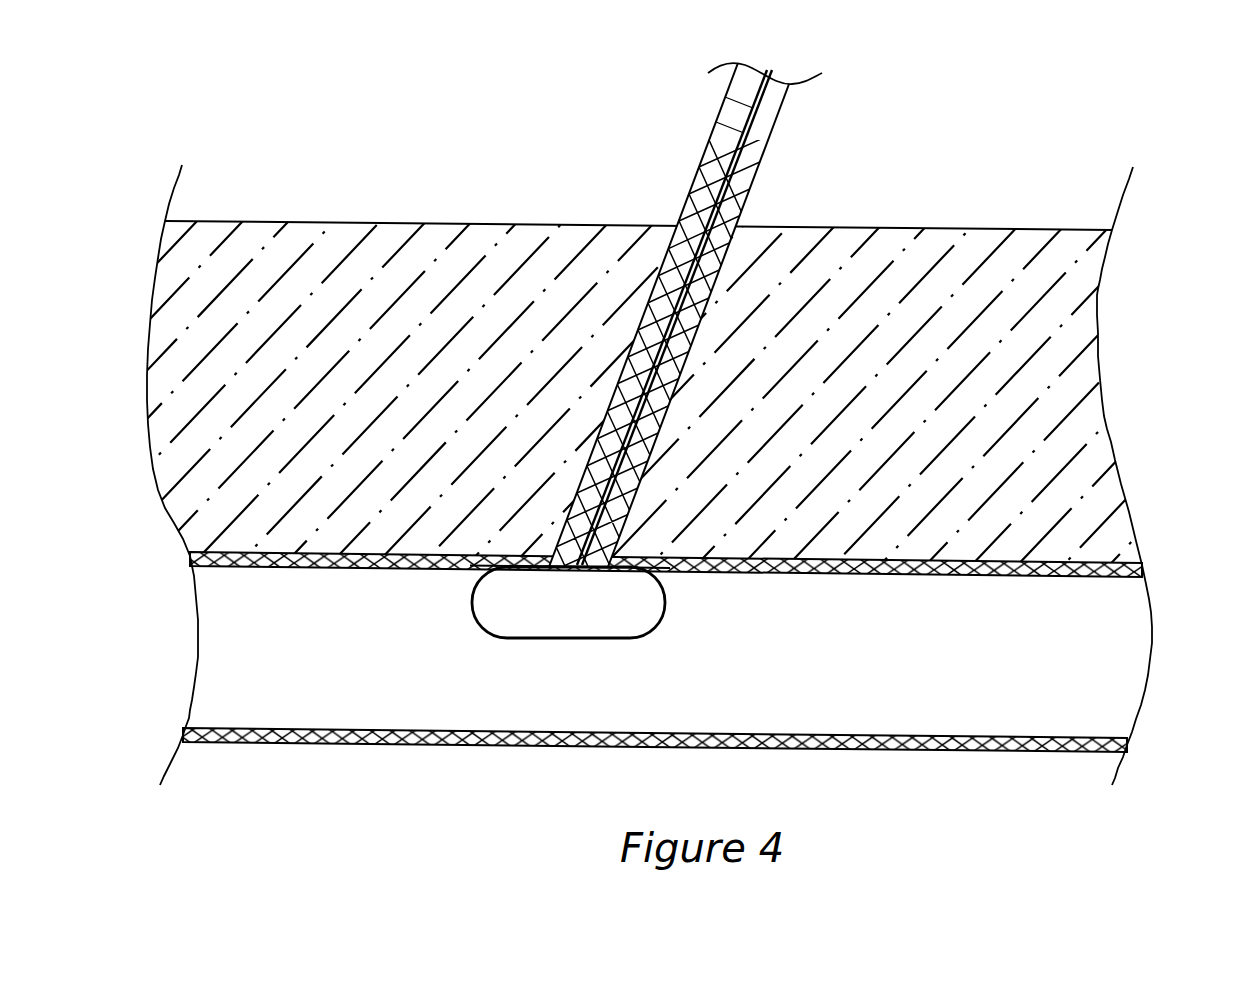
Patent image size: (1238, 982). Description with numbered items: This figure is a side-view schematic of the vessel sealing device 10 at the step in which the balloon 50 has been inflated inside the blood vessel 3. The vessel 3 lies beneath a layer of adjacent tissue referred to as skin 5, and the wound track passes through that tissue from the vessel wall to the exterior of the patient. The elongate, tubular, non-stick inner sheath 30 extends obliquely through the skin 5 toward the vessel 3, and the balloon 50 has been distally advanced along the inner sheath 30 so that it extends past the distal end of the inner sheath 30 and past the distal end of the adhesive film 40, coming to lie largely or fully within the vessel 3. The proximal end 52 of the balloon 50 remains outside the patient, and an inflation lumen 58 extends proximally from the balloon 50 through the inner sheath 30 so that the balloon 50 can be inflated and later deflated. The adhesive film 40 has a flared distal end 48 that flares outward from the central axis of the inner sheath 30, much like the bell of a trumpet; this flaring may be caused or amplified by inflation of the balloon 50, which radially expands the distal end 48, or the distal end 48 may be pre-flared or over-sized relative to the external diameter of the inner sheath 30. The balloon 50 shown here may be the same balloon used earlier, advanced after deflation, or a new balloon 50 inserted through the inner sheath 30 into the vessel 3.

The device 10 is at (343, 86).
The skin 5 is at (1073, 372).
The blood vessel 3 is at (1112, 665).
The non-stick inner sheath 30 is at (763, 125).
The inflation lumen 58 is at (750, 103).
The proximal end 52 is at (730, 215).
The balloon 50 is at (676, 222).
The flared distal end 48 is at (490, 568).
The adhesive film 40 is at (597, 557).